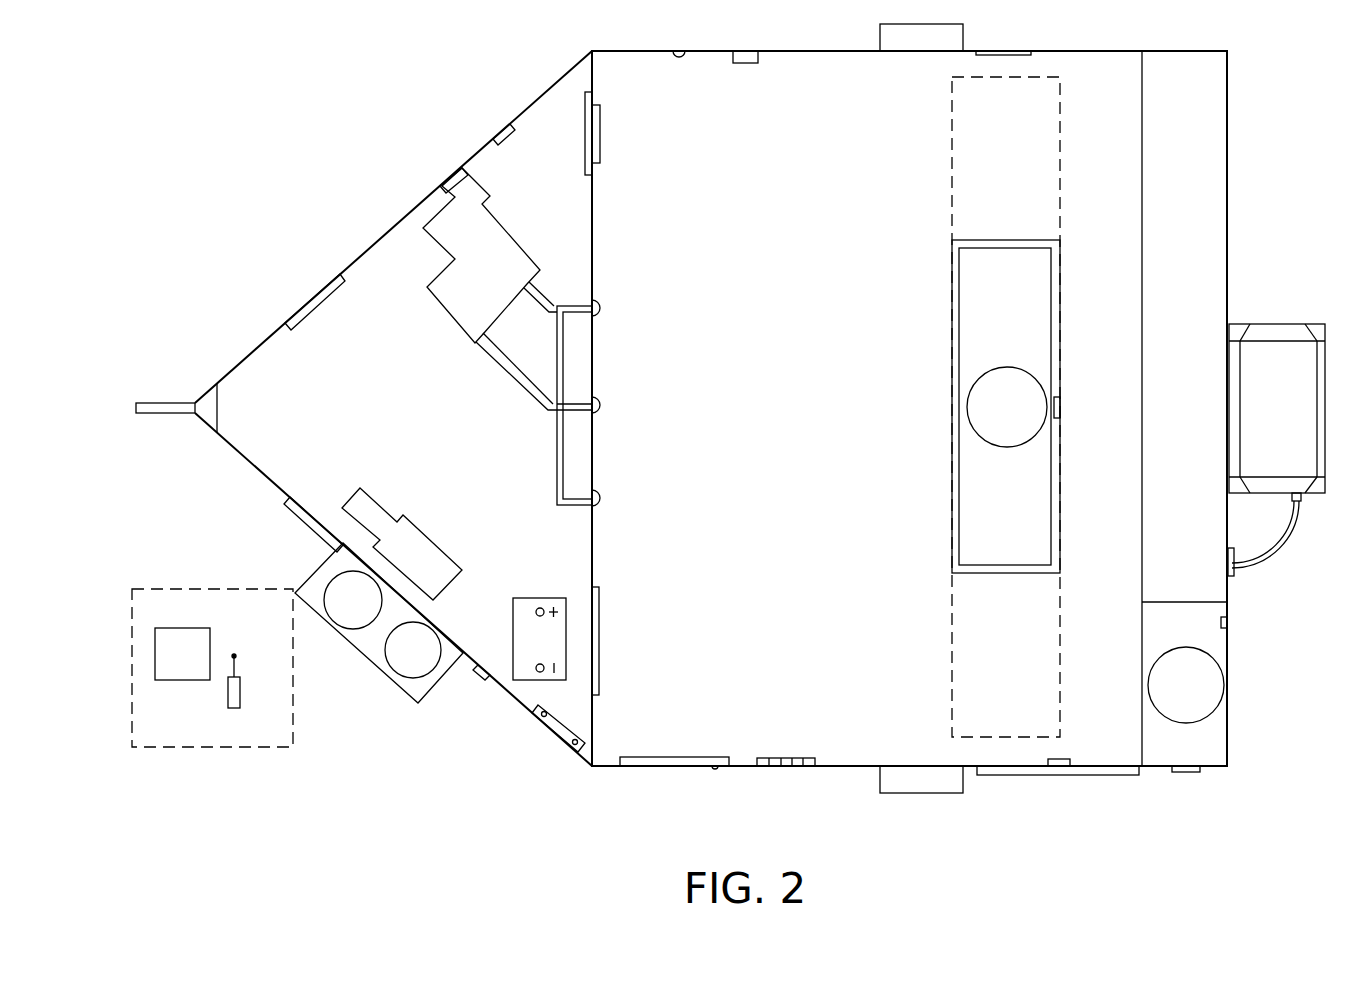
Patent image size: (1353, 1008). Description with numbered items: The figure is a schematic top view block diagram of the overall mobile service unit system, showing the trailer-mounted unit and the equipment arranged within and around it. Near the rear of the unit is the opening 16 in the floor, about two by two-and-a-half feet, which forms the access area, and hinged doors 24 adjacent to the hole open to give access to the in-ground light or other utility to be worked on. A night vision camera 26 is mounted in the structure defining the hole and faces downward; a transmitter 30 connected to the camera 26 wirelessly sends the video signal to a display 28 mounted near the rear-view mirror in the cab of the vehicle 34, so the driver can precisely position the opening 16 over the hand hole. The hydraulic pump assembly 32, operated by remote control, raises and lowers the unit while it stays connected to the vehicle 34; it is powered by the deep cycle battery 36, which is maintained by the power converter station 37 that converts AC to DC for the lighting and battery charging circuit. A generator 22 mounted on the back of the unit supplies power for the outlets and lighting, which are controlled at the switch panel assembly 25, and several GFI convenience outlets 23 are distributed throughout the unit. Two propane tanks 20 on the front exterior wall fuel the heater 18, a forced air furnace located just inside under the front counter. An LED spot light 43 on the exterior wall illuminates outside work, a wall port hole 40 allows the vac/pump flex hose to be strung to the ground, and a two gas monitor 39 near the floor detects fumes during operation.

The opening 16 is at (985, 529).
The heater 18 is at (467, 281).
The propane tanks 20 is at (336, 614).
The generator 22 is at (1261, 445).
The GFI convenience outlets 23 is at (493, 131).
The hinged doors 24 is at (994, 174).
The switch panel assembly 25 is at (775, 767).
The camera 26 is at (1061, 406).
The display 28 is at (166, 668).
The transmitter 30 is at (1060, 757).
The hydraulic pump assembly 32 is at (397, 567).
The vehicle 34 is at (218, 748).
The deep cycle battery 36 is at (524, 653).
The power converter station 37 is at (594, 170).
The two gas monitor 39 is at (745, 64).
The wall port hole 40 is at (1185, 773).
The LED spot light 43 is at (1087, 776).